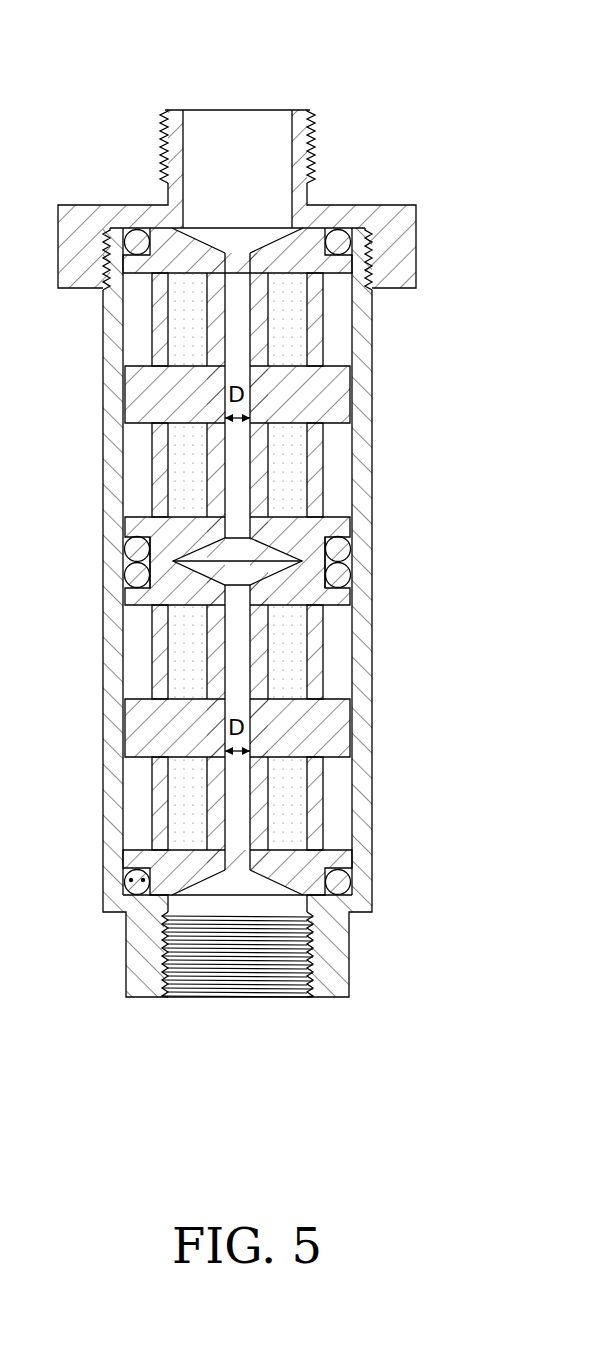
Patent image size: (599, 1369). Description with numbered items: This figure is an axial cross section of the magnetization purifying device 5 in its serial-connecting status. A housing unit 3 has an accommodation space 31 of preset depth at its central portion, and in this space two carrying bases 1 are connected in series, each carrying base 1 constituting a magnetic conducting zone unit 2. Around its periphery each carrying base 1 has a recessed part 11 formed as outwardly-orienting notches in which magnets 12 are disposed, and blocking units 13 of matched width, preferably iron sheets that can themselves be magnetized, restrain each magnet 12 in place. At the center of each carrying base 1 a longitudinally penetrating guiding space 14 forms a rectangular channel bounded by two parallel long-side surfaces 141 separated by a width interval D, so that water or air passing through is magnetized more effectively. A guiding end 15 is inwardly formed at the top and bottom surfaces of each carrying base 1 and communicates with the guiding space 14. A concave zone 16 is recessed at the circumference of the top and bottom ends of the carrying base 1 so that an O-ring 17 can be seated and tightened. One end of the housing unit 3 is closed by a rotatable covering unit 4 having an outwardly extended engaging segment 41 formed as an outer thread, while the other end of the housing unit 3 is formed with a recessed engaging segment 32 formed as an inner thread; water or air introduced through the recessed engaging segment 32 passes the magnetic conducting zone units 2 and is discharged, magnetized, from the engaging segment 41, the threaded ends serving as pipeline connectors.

The carrying base 1 is at (157, 738).
The recessed part 11 is at (288, 424).
The magnet 12 is at (185, 652).
The blocking unit 13 is at (162, 812).
The guiding space 14 is at (248, 362).
The long-side surface 141 is at (223, 412).
The guiding end 15 is at (222, 233).
The concave zone 16 is at (343, 535).
The O-ring 17 is at (338, 548).
The magnetic conducting zone unit 2 is at (397, 702).
The housing unit 3 is at (113, 352).
The accommodation space 31 is at (132, 312).
The recessed engaging segment 32 is at (337, 965).
The covering unit 4 is at (90, 225).
The engaging segment 41 is at (312, 130).
The magnetization purifying device 5 is at (398, 402).